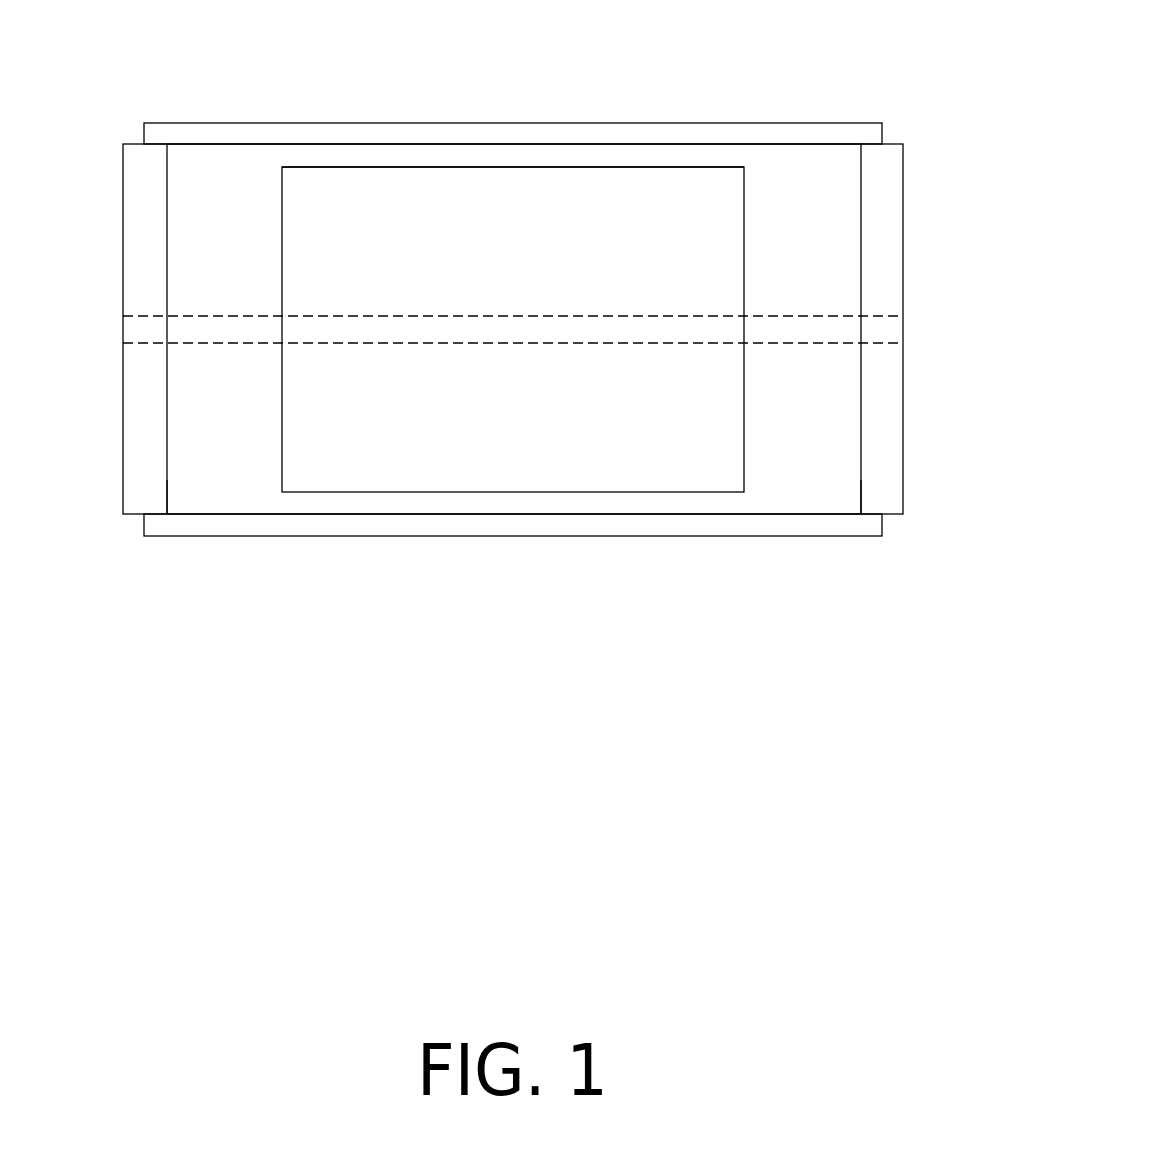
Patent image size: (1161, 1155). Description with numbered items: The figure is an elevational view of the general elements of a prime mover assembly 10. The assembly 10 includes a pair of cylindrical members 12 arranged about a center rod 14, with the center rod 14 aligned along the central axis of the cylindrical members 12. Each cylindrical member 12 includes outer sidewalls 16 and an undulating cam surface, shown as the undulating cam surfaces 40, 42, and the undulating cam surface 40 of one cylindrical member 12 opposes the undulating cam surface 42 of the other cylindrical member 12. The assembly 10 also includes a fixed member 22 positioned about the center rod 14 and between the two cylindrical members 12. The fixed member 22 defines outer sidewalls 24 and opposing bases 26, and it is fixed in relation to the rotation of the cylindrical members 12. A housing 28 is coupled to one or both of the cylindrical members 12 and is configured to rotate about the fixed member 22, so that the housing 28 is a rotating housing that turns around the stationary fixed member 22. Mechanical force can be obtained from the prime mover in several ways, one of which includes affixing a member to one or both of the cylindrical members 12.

The prime mover assembly 10 is at (768, 47).
The cylindrical member 12 is at (140, 247).
The center rod 14 is at (888, 343).
The outer sidewall 16 is at (130, 143).
The fixed member 22 is at (405, 167).
The outer sidewall 24 is at (556, 203).
The opposing base 26 is at (282, 207).
The housing 28 is at (492, 536).
The undulating cam surface 40 is at (167, 490).
The undulating cam surface 42 is at (861, 482).